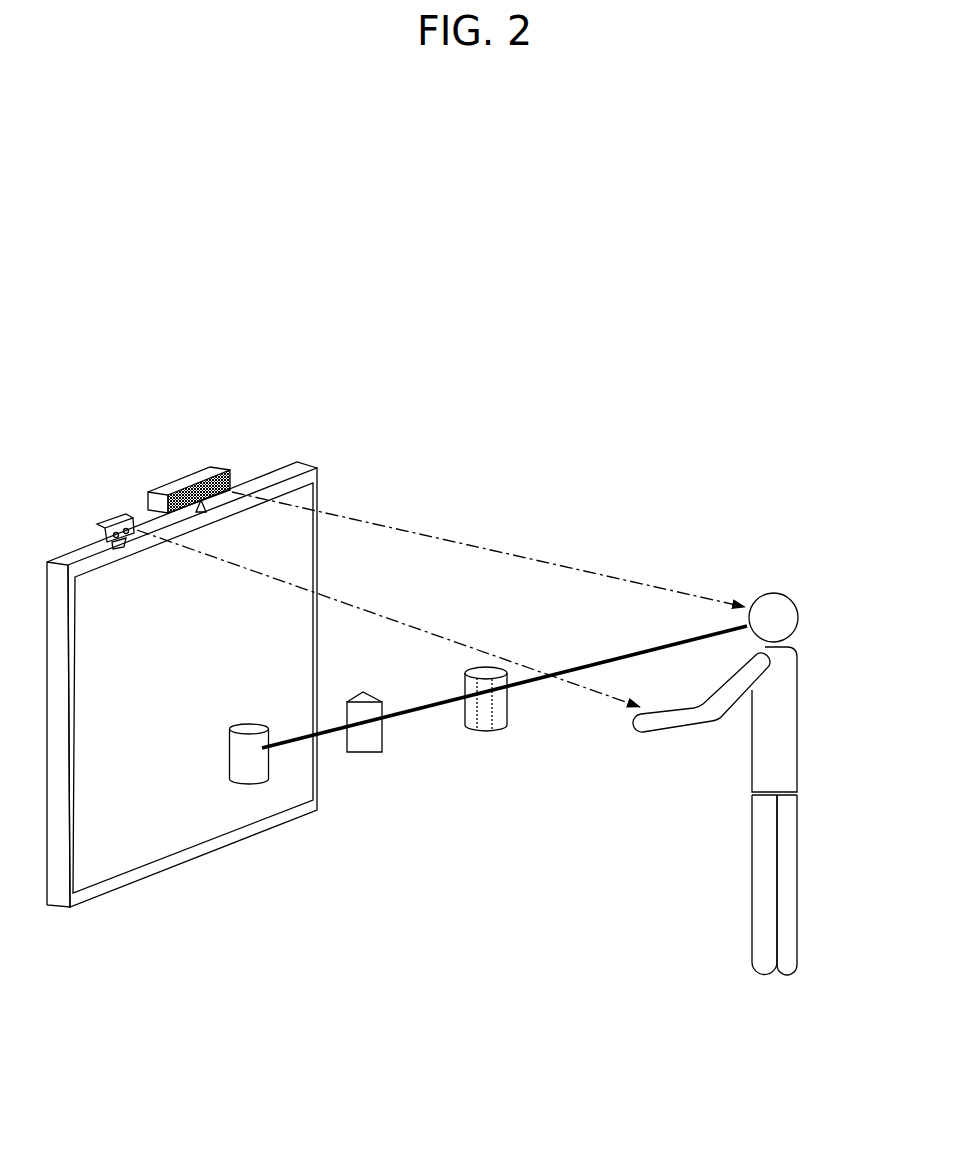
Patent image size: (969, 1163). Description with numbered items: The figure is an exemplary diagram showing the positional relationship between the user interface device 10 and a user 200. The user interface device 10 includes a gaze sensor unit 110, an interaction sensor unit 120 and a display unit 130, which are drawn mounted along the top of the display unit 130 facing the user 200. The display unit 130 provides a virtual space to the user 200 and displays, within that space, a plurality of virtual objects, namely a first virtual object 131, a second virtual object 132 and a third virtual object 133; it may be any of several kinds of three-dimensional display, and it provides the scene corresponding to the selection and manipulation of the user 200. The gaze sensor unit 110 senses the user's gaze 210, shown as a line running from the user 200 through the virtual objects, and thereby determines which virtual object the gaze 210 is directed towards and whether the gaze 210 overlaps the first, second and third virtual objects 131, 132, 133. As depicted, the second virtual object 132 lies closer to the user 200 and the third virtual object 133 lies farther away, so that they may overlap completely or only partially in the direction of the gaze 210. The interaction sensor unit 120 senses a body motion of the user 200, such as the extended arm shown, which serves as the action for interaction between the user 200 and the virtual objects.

The user interface device 10 is at (303, 433).
The gaze sensor unit 110 is at (207, 469).
The interaction sensor unit 120 is at (118, 520).
The display unit 130 is at (122, 858).
The first virtual object 131 is at (485, 731).
The second virtual object 132 is at (363, 753).
The third virtual object 133 is at (250, 727).
The user 200 is at (798, 677).
The user's gaze 210 is at (643, 651).